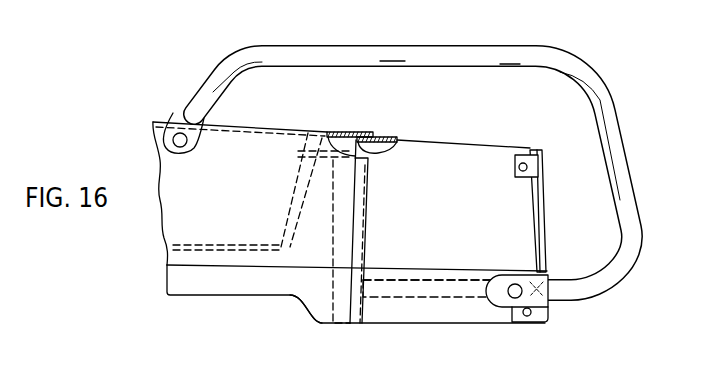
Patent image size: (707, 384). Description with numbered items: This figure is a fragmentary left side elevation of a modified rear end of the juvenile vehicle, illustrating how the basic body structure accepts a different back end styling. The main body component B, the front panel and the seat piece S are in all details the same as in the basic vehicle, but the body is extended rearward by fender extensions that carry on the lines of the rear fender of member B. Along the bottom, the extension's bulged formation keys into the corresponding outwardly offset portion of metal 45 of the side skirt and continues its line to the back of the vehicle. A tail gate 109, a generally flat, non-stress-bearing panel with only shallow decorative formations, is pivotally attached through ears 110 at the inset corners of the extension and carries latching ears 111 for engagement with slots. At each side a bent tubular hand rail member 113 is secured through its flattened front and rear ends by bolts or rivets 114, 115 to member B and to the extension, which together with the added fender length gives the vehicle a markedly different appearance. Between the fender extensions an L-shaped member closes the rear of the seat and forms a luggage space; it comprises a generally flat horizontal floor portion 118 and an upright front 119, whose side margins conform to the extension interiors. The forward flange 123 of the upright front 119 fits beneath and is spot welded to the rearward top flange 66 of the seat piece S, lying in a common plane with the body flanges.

The bent tubular hand rail member 113 is at (333, 47).
The rearward top flange of the seat member 66 is at (311, 132).
The latching ears 111 is at (532, 147).
The bolt or rivet 114 is at (190, 152).
The forward flange 123 is at (327, 158).
The upright front 119 is at (362, 228).
The tail gate 109 is at (545, 218).
The horizontal floor portion 118 is at (417, 293).
The bolt or rivet 115 is at (507, 297).
The ears 110 is at (527, 322).
The outwardly offset portion of metal 45 is at (320, 303).
The seat piece S is at (193, 247).
The main body component B is at (222, 295).